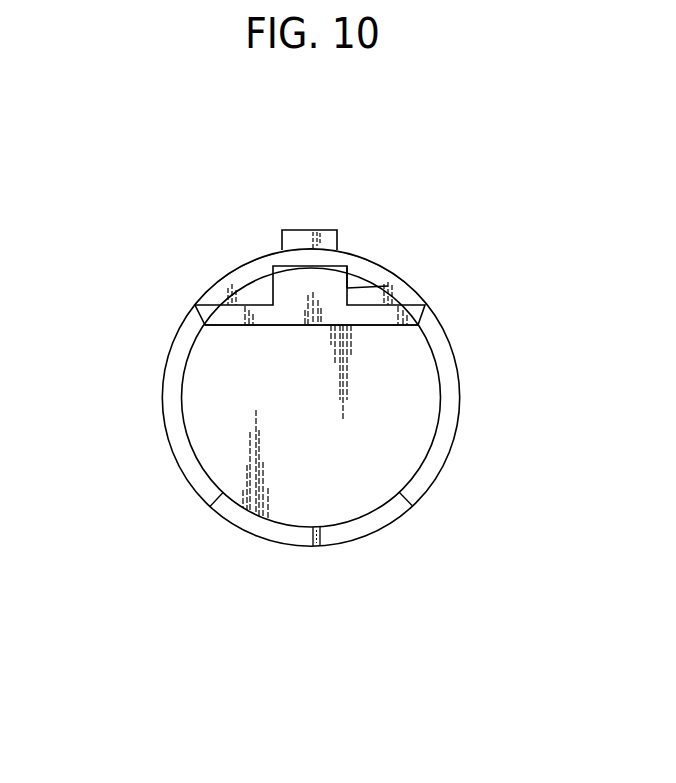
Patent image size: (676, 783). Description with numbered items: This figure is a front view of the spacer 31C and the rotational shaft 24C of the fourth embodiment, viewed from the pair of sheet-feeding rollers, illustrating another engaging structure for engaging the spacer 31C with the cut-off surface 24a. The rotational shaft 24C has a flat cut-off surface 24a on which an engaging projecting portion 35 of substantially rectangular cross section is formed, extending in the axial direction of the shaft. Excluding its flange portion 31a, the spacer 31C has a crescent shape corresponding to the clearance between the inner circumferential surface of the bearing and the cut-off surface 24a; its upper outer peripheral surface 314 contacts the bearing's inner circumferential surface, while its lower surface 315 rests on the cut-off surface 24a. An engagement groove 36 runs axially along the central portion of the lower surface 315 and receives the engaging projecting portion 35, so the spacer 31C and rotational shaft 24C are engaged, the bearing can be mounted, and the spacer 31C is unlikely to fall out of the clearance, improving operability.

The rotational shaft 24C is at (207, 450).
The cut-off surface 24a is at (252, 305).
The outer peripheral surface 314 is at (253, 259).
The lower surface 315 is at (208, 305).
The flange portion 31a is at (298, 238).
The spacer 31C is at (362, 270).
The engaging projecting portion 35 is at (313, 287).
The engagement groove 36 is at (389, 285).